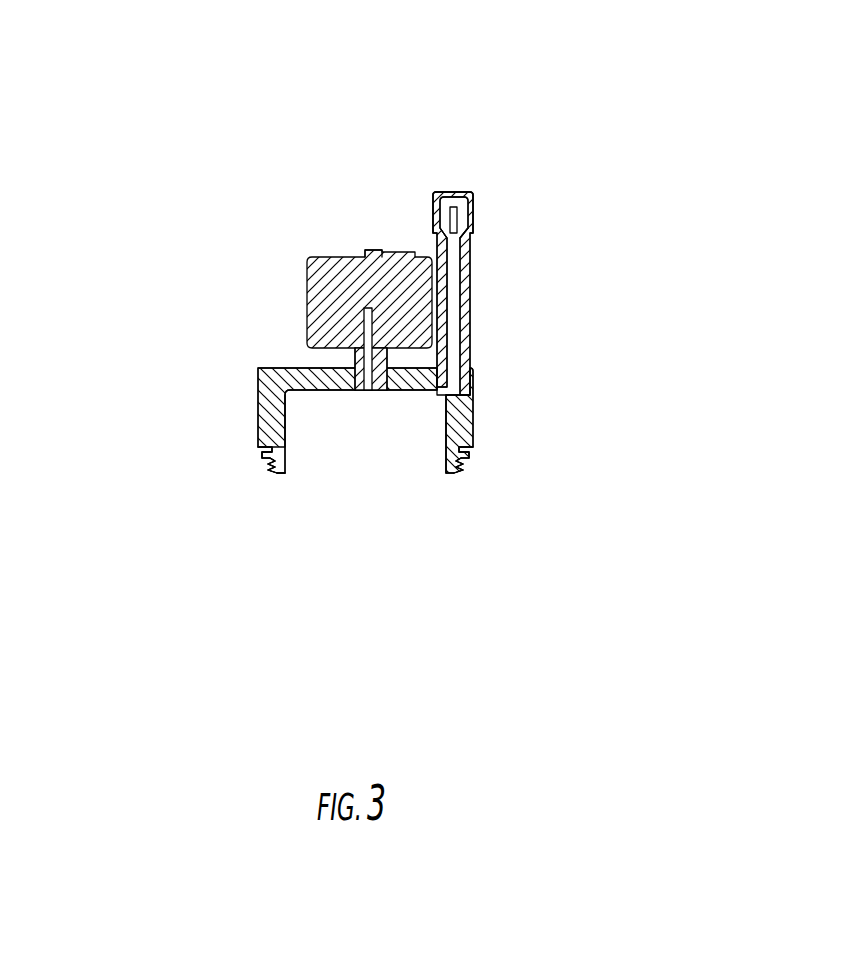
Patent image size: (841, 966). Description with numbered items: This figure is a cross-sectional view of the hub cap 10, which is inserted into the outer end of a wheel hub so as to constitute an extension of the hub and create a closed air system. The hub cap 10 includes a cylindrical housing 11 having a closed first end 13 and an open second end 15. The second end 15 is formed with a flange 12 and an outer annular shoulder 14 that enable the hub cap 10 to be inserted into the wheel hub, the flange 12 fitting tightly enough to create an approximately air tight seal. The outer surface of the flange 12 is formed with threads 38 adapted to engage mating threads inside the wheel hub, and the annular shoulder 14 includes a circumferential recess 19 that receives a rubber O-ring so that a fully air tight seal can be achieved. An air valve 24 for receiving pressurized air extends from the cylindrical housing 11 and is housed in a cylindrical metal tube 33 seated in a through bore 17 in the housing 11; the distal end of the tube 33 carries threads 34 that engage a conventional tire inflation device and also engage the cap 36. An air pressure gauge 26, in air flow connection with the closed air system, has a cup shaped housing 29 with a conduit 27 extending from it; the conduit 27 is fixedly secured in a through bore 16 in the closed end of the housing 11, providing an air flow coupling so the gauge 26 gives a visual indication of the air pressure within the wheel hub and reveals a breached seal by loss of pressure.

The hub cap 10 is at (597, 90).
The cylindrical housing 11 is at (473, 408).
The flange 12 is at (284, 477).
The closed first end 13 is at (258, 387).
The outer annular shoulder 14 is at (270, 477).
The open second end 15 is at (357, 521).
The through bore 16 is at (367, 391).
The through bore 17 is at (443, 397).
The circumferential recess 19 is at (258, 449).
The air valve 24 is at (450, 220).
The air pressure gauge 26 is at (355, 302).
The conduit 27 is at (355, 357).
The cup shaped housing 29 is at (317, 255).
The cylindrical metal tube 33 is at (470, 272).
The threads 34 is at (467, 207).
The cap 36 is at (452, 192).
The threads 38 is at (271, 468).